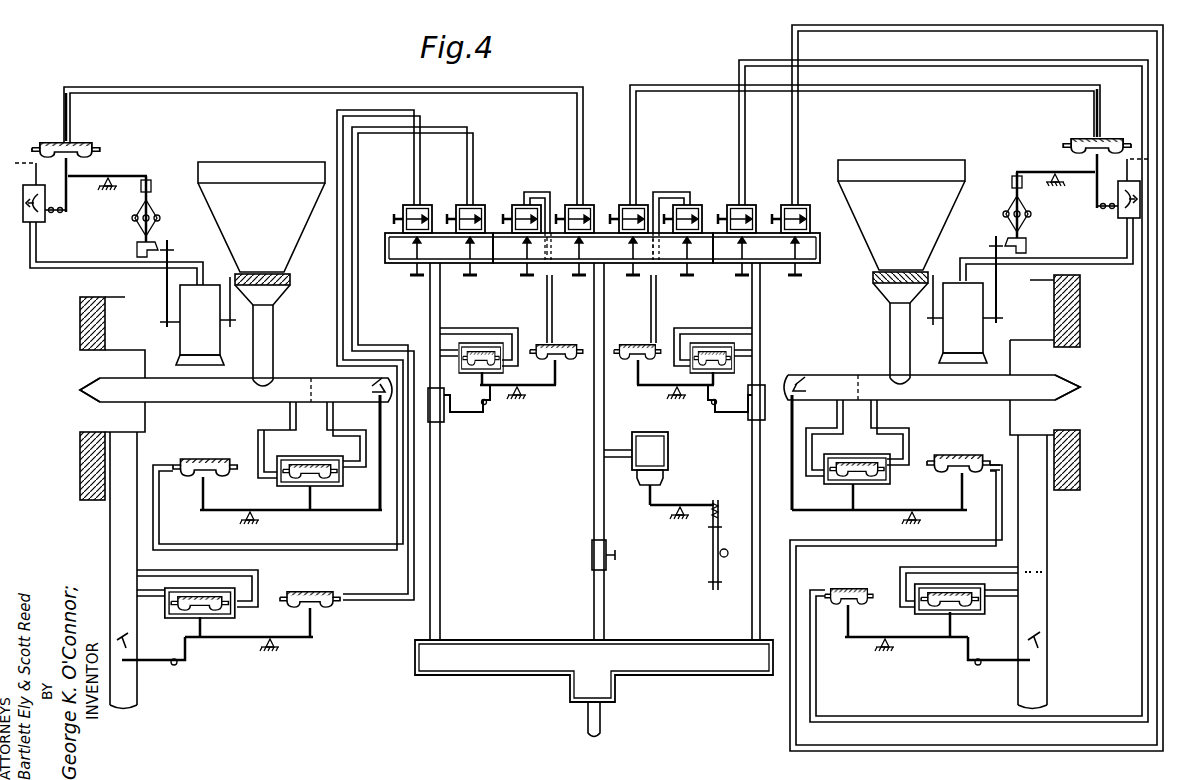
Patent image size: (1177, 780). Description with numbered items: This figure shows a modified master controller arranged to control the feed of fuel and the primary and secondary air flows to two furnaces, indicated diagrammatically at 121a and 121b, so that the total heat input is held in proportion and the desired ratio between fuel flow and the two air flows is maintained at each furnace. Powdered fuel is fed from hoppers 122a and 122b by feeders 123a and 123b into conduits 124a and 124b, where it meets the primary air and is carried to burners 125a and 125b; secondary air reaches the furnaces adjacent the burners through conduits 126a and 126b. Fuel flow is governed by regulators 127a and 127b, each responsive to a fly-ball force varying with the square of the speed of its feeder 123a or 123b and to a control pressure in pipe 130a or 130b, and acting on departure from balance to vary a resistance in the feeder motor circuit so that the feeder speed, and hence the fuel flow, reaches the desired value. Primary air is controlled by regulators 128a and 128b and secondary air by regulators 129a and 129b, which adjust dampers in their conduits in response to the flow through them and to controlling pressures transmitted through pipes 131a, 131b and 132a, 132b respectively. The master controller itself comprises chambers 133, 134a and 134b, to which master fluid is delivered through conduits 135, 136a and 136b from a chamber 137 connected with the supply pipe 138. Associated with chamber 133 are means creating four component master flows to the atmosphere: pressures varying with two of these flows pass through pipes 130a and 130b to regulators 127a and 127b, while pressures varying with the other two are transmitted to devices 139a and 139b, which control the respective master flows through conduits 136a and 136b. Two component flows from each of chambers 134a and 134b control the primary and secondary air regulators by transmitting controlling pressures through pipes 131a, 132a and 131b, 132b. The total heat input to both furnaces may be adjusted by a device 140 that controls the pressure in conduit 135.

The furnace 121a is at (82, 451).
The furnace 121b is at (1068, 485).
The hopper 122a is at (261, 274).
The hopper 122b is at (901, 272).
The feeder 123a is at (185, 336).
The feeder 123b is at (975, 335).
The conduit 124a is at (236, 390).
The conduit 124b is at (932, 387).
The burner 125a is at (82, 392).
The burner 125b is at (1063, 398).
The conduit 126a is at (112, 527).
The conduit 126b is at (1047, 558).
The regulator 127a is at (100, 178).
The regulator 127b is at (1043, 172).
The regulator 128a is at (228, 514).
The regulator 128b is at (928, 512).
The regulator 129a is at (243, 640).
The regulator 129b is at (915, 640).
The pipe 130a is at (578, 106).
The pipe 130b is at (650, 79).
The pipe 131a is at (337, 113).
The pipe 131b is at (792, 28).
The pipe 132a is at (473, 150).
The pipe 132b is at (740, 63).
The chamber 133 is at (603, 254).
The chamber 134a is at (439, 254).
The chamber 134b is at (766, 254).
The conduit 135 is at (594, 433).
The conduit 136a is at (440, 487).
The conduit 136b is at (752, 447).
The chamber 137 is at (594, 671).
The supply pipe 138 is at (598, 723).
The device 139a is at (546, 388).
The device 139b is at (653, 388).
The device 140 is at (668, 472).